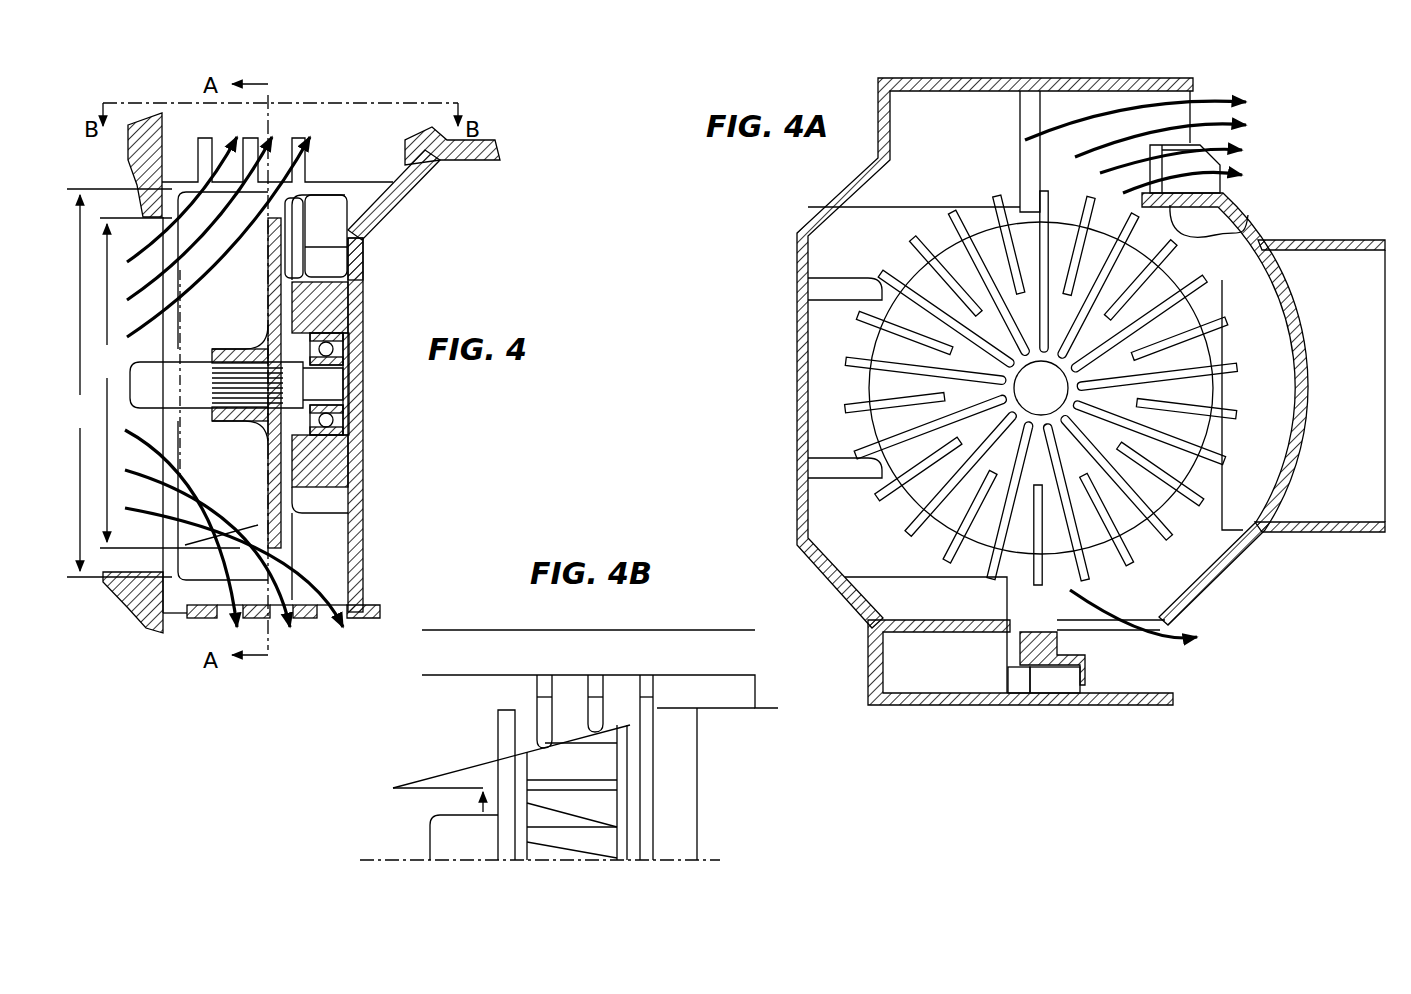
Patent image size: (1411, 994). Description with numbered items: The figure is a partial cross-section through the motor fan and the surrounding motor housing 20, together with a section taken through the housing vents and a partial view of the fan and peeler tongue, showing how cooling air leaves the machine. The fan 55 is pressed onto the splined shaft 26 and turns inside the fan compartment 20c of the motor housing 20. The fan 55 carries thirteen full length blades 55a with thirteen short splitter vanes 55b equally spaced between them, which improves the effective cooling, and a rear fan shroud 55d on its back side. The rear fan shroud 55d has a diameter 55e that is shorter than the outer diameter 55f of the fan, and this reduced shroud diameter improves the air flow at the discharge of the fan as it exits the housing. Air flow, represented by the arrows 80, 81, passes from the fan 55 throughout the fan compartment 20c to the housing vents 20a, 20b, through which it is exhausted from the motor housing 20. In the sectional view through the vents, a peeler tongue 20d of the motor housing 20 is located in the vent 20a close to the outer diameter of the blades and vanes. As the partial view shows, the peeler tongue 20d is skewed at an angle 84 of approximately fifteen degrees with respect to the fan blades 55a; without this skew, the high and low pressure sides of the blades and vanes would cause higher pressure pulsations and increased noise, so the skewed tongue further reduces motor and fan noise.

In FIG. 4, the motor housing 20 is at (413, 185).
In FIG. 4A, the motor housing 20 is at (882, 78).
In FIG. 4B, the motor housing 20 is at (637, 647).
In FIG. 4, the housing vent 20a is at (365, 205).
In FIG. 4A, the housing vent 20a is at (1218, 68).
In FIG. 4, the housing vent 20b is at (273, 622).
In FIG. 4A, the housing vent 20b is at (1070, 630).
In FIG. 4, the fan compartment 20c is at (313, 543).
In FIG. 4A, the fan compartment 20c is at (1207, 545).
In FIG. 4A, the peeler tongue 20d is at (1228, 250).
In FIG. 4B, the peeler tongue 20d is at (580, 737).
In FIG. 4, the motor shaft 26 is at (203, 360).
In FIG. 4, the fan 55 is at (350, 456).
In FIG. 4, the full length blades 55a is at (260, 266).
In FIG. 4A, the full length blades 55a is at (1240, 365).
In FIG. 4B, the full length blades 55a is at (590, 783).
In FIG. 4, the short (splitter) vanes 55b is at (257, 527).
In FIG. 4A, the short (splitter) vanes 55b is at (1240, 416).
In FIG. 4, the rear fan shroud 55d is at (282, 242).
In FIG. 4B, the rear fan shroud 55d is at (628, 730).
In FIG. 4, the diameter of rear fan shroud 55e is at (166, 383).
In FIG. 4, the outer diameter 55f is at (119, 383).
In FIG. 4, the arrows 80 is at (210, 245).
In FIG. 4A, the arrows 80 is at (1266, 88).
In FIG. 4, the arrows 81 is at (185, 542).
In FIG. 4A, the arrows 81 is at (1180, 645).
In FIG. 4B, the angle 84 is at (487, 765).